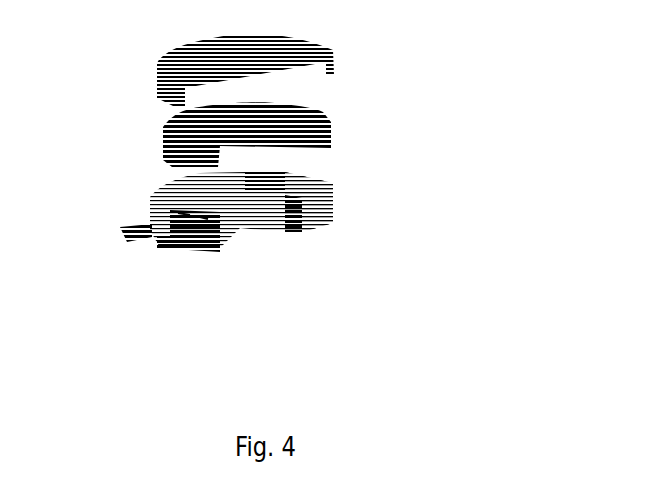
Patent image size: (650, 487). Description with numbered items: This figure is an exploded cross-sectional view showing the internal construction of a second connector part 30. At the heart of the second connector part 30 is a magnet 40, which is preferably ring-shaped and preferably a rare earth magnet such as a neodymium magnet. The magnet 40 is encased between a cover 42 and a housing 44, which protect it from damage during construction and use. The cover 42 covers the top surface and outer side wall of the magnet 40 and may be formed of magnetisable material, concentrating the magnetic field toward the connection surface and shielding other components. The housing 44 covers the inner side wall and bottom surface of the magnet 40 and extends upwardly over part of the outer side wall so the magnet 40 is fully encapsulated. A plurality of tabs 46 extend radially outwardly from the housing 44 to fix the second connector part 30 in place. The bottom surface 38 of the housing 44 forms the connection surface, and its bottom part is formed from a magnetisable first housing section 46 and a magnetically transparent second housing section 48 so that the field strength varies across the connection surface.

The second connector part 30 is at (479, 47).
The bottom surface 38 is at (196, 250).
The magnet 40 is at (168, 148).
The cover 42 is at (158, 70).
The housing 44 is at (153, 200).
The tab 46 is at (180, 245).
The second housing section 48 is at (300, 216).